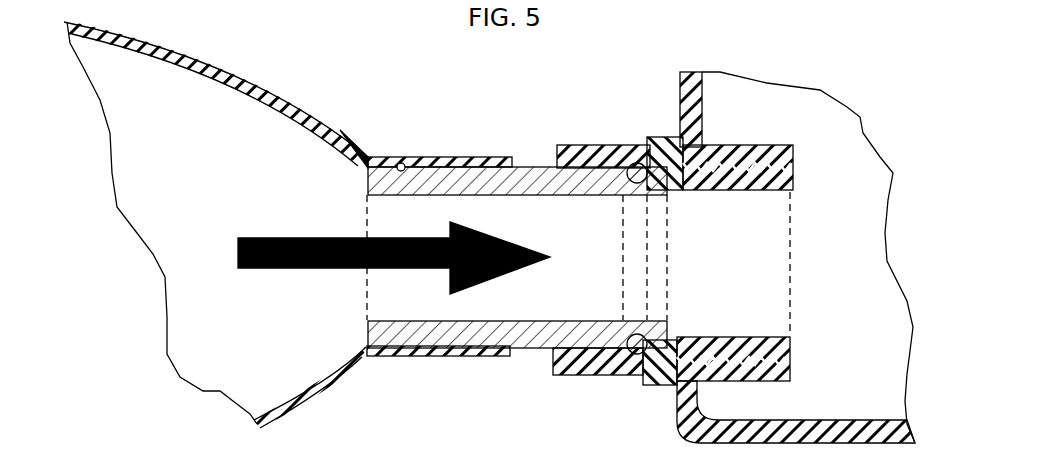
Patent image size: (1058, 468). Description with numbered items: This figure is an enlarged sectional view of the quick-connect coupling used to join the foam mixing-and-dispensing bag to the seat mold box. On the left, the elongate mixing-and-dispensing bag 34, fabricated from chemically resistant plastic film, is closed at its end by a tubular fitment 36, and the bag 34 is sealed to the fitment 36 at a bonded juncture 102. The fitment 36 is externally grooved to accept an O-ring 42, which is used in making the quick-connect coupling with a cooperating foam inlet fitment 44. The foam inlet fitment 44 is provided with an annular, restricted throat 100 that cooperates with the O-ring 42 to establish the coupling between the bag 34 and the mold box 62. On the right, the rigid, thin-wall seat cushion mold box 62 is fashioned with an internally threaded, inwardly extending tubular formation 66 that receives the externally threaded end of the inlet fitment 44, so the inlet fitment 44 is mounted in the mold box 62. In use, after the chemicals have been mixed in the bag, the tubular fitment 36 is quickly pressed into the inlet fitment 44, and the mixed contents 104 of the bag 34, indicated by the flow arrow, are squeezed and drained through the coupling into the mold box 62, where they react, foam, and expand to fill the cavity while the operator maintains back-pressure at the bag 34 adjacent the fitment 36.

The mixing-and-dispensing bag 34 is at (249, 66).
The mixed contents 104 is at (231, 160).
The bonded juncture 102 is at (404, 161).
The annular restricted throat 100 is at (578, 170).
The O-ring 42 is at (632, 162).
The tubular formation 66 is at (752, 146).
The seat cushion mold box 62 is at (914, 432).
The tubular fitment 36 is at (527, 357).
The foam inlet fitment 44 is at (593, 378).